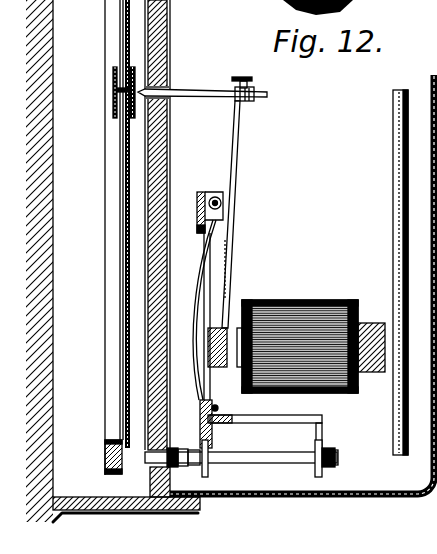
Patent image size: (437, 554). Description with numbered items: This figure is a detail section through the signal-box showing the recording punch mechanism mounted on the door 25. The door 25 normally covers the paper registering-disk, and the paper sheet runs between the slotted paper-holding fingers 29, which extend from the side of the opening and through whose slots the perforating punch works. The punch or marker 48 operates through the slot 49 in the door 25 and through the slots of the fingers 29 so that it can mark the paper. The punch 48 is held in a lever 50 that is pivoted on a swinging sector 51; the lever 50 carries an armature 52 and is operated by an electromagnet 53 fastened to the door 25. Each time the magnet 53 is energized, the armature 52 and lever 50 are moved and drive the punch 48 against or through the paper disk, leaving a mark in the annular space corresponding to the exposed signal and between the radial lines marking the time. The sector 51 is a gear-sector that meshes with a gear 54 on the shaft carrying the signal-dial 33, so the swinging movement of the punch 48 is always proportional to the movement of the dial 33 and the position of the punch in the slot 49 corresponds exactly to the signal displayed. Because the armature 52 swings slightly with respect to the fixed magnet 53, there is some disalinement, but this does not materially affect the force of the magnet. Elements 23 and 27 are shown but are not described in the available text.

The rod 23 is at (130, 262).
The door 25 is at (165, 175).
The block 27 is at (115, 387).
The paper-holding fingers 29 is at (131, 120).
The signal-dial 33 is at (405, 220).
The punch 48 is at (175, 88).
The slot 49 is at (167, 83).
The lever 50 is at (232, 165).
The swinging sector 51 is at (204, 246).
The armature 52 is at (234, 322).
The electromagnet 53 is at (288, 320).
The gear 54 is at (259, 462).